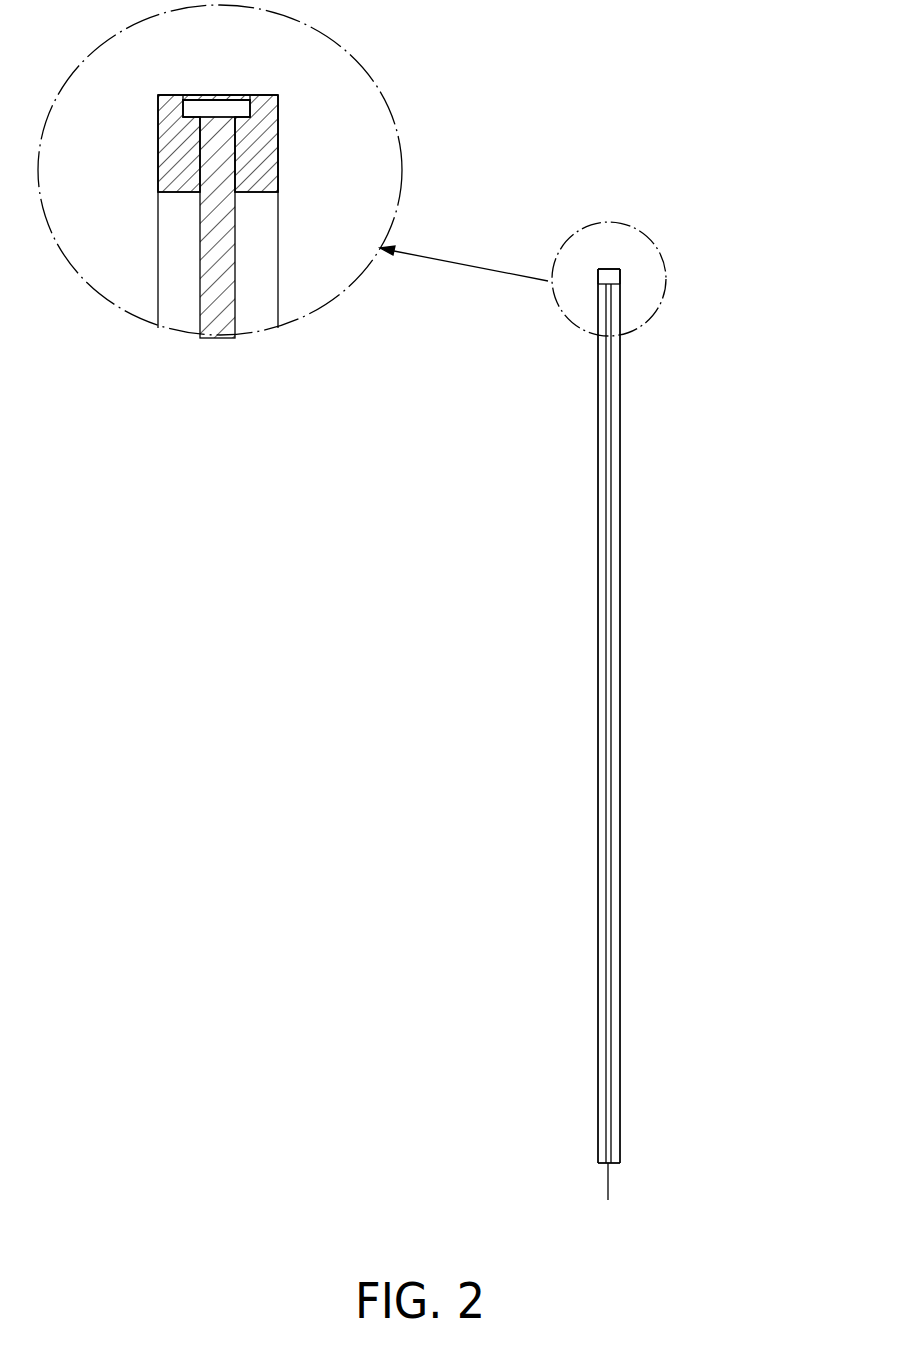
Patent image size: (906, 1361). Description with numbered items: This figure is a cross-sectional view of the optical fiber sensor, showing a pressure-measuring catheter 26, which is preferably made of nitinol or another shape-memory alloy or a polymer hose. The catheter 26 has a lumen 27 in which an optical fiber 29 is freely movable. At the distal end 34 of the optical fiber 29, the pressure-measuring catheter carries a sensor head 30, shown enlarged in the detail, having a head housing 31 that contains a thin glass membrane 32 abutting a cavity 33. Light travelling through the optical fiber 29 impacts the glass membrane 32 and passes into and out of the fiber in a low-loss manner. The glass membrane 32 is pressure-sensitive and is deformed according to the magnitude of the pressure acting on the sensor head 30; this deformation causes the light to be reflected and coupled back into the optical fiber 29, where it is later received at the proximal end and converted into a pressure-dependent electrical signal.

The pressure-measuring catheter 26 is at (716, 484).
The lumen 27 is at (265, 220).
The optical fiber 29 is at (213, 258).
The sensor head 30 is at (146, 132).
The head housing 31 is at (158, 147).
The glass membrane 32 is at (200, 97).
The cavity 33 is at (218, 110).
The distal end 34 is at (609, 260).